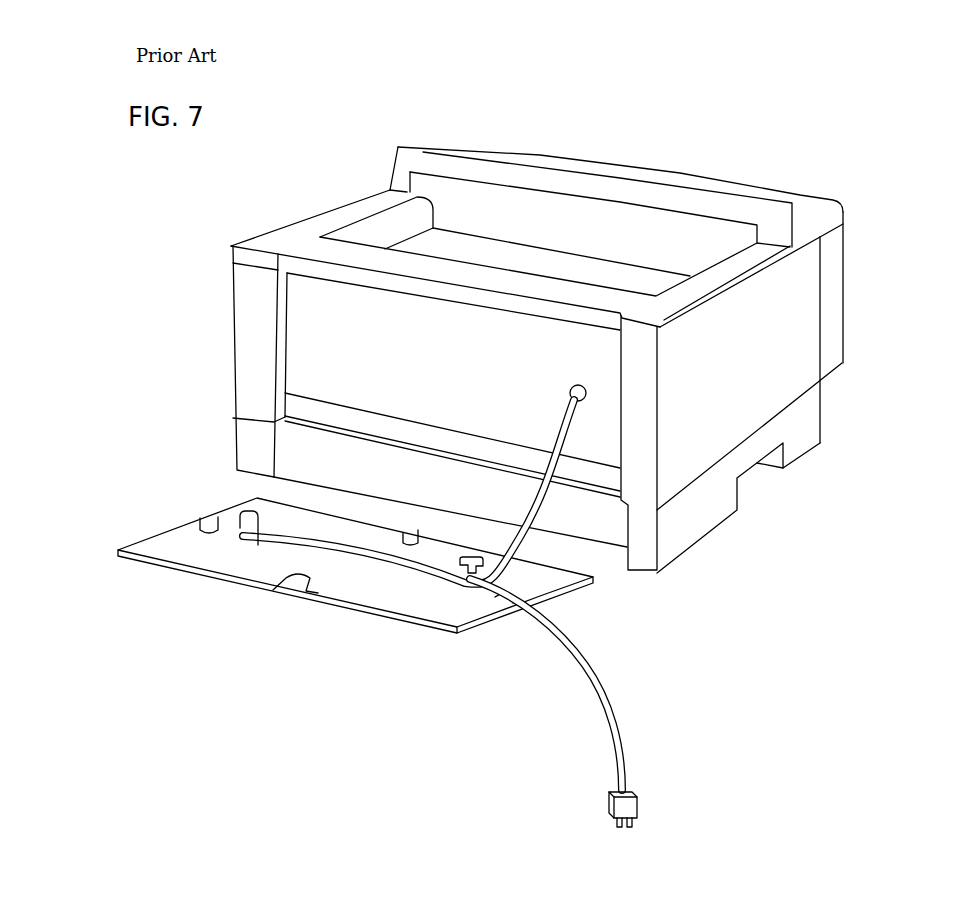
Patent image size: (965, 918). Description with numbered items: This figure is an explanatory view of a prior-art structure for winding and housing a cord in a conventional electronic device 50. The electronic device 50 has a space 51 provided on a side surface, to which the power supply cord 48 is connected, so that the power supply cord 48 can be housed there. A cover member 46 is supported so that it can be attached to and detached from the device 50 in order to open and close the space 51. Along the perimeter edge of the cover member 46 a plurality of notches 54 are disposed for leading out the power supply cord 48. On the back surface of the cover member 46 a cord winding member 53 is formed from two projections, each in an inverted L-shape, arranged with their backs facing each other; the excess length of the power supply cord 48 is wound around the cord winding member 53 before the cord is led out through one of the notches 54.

The electronic device 50 is at (874, 212).
The space 51 is at (463, 355).
The cover member 46 is at (433, 632).
The power supply cord 48 is at (611, 698).
The cord winding member 53 is at (262, 574).
The notches 54 is at (403, 533).